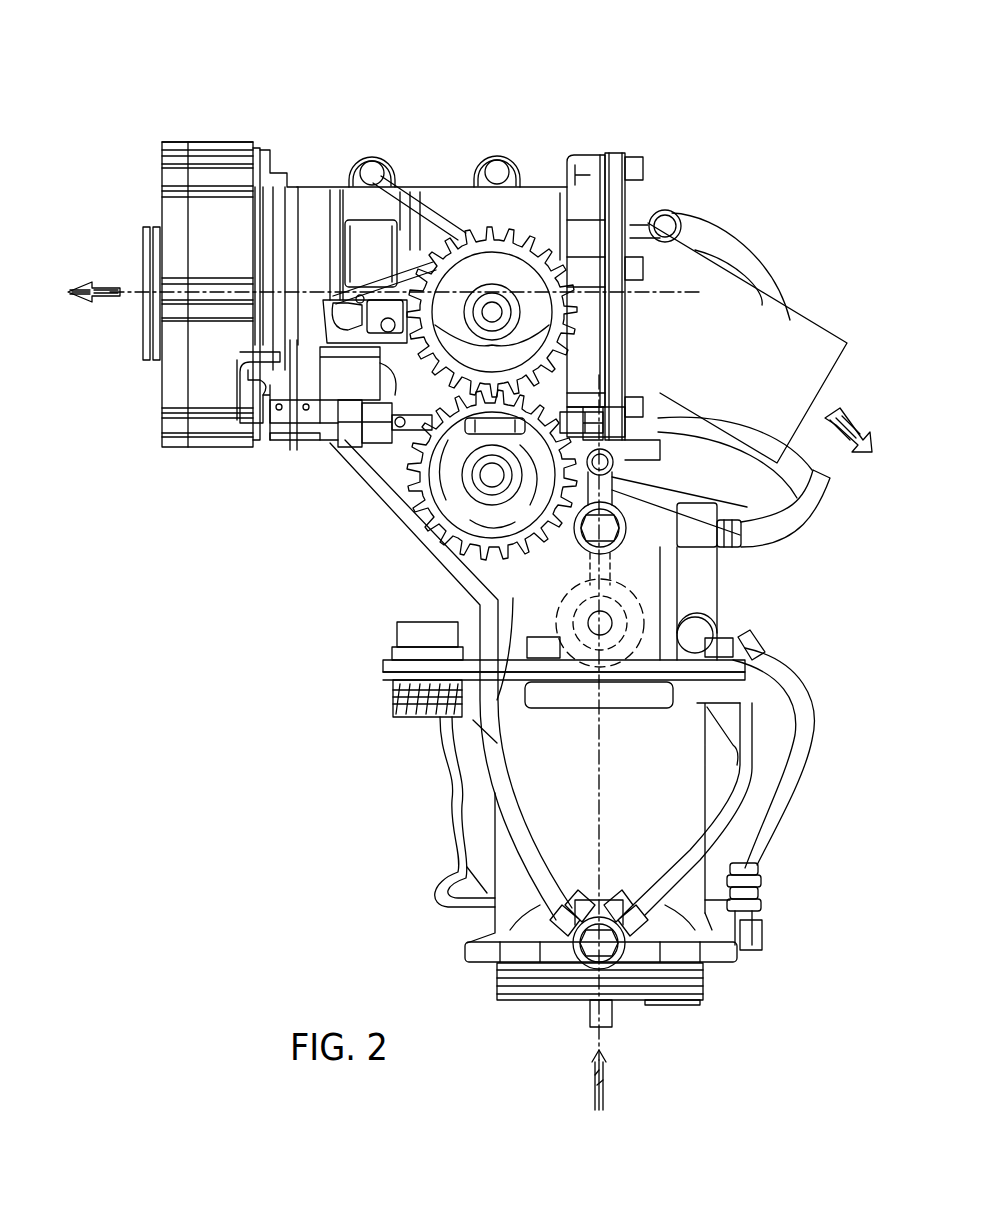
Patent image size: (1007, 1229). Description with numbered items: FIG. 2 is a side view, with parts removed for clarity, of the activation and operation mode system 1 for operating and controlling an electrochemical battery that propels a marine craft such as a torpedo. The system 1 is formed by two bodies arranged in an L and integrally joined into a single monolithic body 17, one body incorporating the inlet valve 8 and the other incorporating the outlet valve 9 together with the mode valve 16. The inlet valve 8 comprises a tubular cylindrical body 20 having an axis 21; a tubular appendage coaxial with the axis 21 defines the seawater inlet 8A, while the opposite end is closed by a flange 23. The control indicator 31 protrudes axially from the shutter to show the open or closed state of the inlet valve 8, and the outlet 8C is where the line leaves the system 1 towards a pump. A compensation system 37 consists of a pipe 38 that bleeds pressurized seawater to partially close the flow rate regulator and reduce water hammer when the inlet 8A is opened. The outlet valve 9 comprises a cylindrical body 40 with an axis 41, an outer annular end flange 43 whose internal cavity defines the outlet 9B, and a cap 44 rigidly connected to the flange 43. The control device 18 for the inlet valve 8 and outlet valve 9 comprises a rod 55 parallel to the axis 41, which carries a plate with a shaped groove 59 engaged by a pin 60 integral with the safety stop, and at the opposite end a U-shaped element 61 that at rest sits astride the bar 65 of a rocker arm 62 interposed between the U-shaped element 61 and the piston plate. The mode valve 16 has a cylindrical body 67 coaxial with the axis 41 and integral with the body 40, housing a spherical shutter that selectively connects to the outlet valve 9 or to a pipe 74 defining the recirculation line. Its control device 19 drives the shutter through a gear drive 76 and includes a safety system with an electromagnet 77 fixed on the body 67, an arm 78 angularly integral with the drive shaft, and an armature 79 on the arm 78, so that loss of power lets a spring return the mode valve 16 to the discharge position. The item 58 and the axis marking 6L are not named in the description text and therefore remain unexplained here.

The activation and operation mode system 1 is at (632, 112).
The inlet valve 8 is at (683, 882).
The inlet 8A is at (527, 1000).
The outlet 8C is at (846, 375).
The outlet valve 9 is at (322, 204).
The outlet 9B is at (141, 257).
The mode valve 16 is at (480, 210).
The monolithic body 17 is at (366, 652).
The control device 18 is at (405, 505).
The control device 19 is at (576, 328).
The tubular cylindrical body 20 is at (665, 785).
The axis 21 is at (604, 1036).
The flange 23 is at (725, 688).
The control indicator 31 is at (588, 1019).
The compensation system 37 is at (792, 827).
The pipe 38 is at (786, 792).
The cylindrical body 40 is at (308, 205).
The axis 41 is at (130, 302).
The outer annular end flange 43 is at (220, 178).
The cap 44 is at (168, 208).
The rod 55 is at (314, 445).
The lever 58 is at (252, 425).
The shaped groove 59 is at (306, 430).
The pin 60 is at (237, 380).
The U-shaped element 61 is at (632, 440).
The rocker arm 62 is at (615, 502).
The bar 65 is at (640, 464).
The cylindrical body 67 is at (543, 230).
The pipe 74 is at (800, 345).
The gear drive 76 is at (596, 222).
The electromagnet 77 is at (385, 438).
The arm 78 is at (395, 290).
The armature 79 is at (337, 345).
The oil pump axis 6L is at (640, 598).